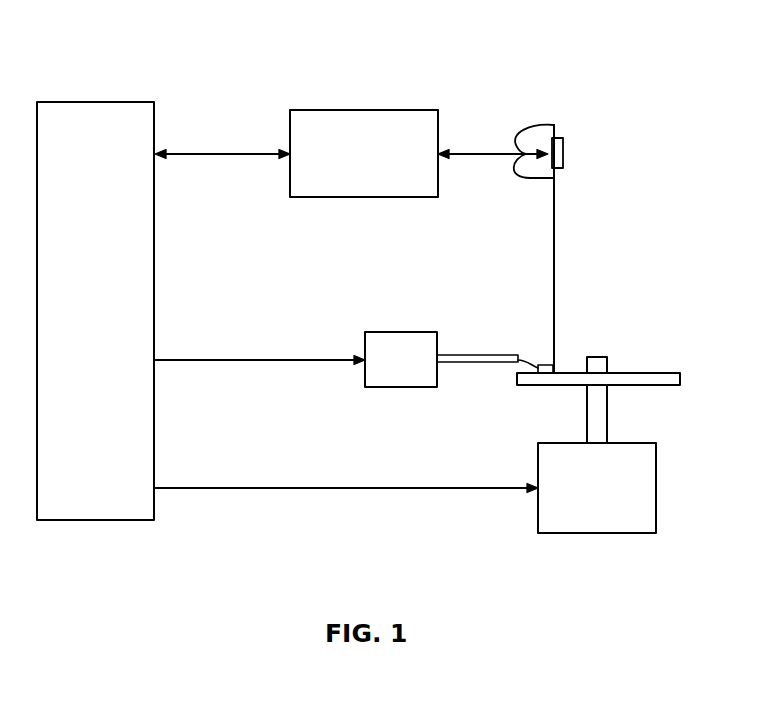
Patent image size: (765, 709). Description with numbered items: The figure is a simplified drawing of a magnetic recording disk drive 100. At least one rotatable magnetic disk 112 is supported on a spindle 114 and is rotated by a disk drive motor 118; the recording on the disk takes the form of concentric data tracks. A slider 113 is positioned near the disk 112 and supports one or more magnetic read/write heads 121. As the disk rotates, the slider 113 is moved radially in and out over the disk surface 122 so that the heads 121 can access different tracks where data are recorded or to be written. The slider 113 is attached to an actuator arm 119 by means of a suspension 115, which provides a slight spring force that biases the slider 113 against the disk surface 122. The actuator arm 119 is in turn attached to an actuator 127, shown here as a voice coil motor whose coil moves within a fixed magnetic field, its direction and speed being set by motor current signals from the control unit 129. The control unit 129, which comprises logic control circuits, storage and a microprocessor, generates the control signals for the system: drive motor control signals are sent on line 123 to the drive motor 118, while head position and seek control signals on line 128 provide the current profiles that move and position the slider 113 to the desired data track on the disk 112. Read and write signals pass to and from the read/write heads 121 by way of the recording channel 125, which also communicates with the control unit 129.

The disk drive 100 is at (190, 537).
The magnetic disk 112 is at (640, 373).
The slider 113 is at (539, 128).
The spindle 114 is at (603, 357).
The suspension 115 is at (531, 366).
The disk drive motor 118 is at (630, 443).
The actuator arm 119 is at (478, 363).
The magnetic read/write head 121 is at (565, 153).
The disk surface 122 is at (570, 373).
The line for drive motor control signals 123 is at (378, 490).
The recording channel 125 is at (402, 110).
The actuator 127 is at (412, 332).
The line for head position and seek control signals 128 is at (240, 360).
The control unit 129 is at (137, 102).